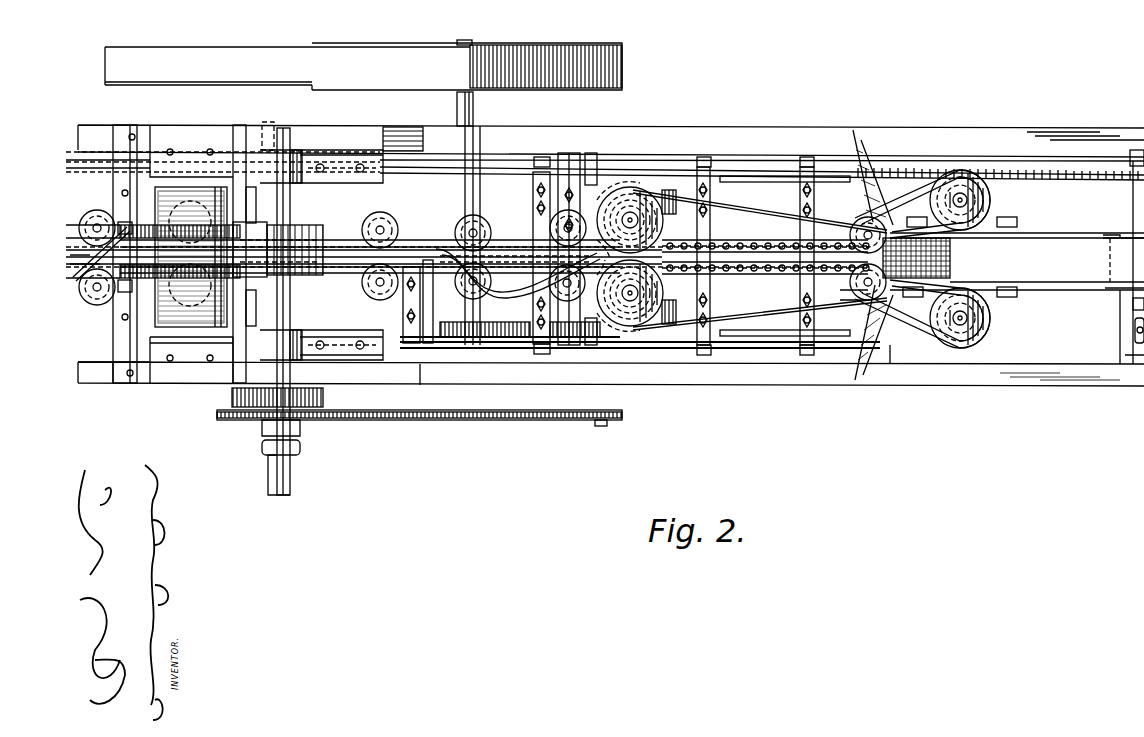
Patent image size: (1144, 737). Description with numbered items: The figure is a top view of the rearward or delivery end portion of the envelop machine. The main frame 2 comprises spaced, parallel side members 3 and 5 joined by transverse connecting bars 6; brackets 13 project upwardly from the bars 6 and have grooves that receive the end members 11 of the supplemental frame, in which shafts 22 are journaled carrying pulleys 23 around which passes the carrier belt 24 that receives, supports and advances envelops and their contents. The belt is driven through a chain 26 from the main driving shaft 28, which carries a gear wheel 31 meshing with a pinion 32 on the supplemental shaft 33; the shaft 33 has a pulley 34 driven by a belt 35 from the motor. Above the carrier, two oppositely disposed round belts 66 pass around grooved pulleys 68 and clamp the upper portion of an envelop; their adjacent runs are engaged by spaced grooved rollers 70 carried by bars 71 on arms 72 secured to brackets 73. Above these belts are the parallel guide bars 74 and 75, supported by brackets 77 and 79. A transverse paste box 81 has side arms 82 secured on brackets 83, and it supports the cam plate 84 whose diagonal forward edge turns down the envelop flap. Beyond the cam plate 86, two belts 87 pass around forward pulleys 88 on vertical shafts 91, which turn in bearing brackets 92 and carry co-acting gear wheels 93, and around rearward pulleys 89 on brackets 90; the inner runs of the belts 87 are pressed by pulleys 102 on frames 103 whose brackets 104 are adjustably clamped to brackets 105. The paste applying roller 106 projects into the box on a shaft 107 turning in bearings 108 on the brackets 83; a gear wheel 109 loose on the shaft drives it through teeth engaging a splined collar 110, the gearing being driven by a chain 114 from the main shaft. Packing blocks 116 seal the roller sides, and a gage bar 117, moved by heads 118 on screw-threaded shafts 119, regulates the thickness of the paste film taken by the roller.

The main frame 2 is at (129, 383).
The side member 3 is at (1064, 131).
The side member 5 is at (1023, 385).
The transverse connecting bar 6 is at (1125, 355).
The end member 11 is at (1133, 304).
The bracket 13 is at (1134, 331).
The shaft 22 is at (1140, 140).
The pulley 23 is at (1113, 236).
The belt 24 is at (1017, 260).
The chain 26 is at (1028, 175).
The main driving shaft 28 is at (594, 153).
The gear wheel 31 is at (512, 340).
The pinion 32 is at (444, 340).
The supplemental shaft 33 is at (474, 107).
The pulley 34 is at (384, 44).
The belt 35 is at (224, 55).
The belt 66 is at (926, 170).
The grooved pulley 68 is at (992, 200).
The grooved roller 70 is at (88, 214).
The bar 71 is at (420, 240).
The arm 72 is at (541, 156).
The bracket 73 is at (535, 194).
The bar 74 is at (420, 262).
The bar 75 is at (428, 288).
The bracket 77 is at (126, 160).
The bracket 79 is at (110, 380).
The paste box 81 is at (196, 187).
The side arm 82 is at (186, 130).
The bracket 83 is at (296, 136).
The cam plate 84 is at (90, 290).
The cam plate 86 is at (504, 248).
The belt 87 is at (776, 207).
The forward pulley 88 is at (648, 186).
The rearward pulley 89 is at (878, 230).
The bracket 90 is at (866, 255).
The vertical shaft 91 is at (633, 218).
The bearing bracket 92 is at (667, 188).
The gear wheel 93 is at (617, 190).
The pulley 102 is at (723, 238).
The frame 103 is at (770, 238).
The bracket 104 is at (722, 177).
The bracket 105 is at (705, 158).
The paste applying roller 106 is at (300, 230).
The shaft 107 is at (291, 322).
The bearing 108 is at (304, 158).
The gear wheel 109 is at (326, 398).
The collar 110 is at (298, 446).
The chain 114 is at (500, 422).
The packing block 116 is at (248, 186).
The gage bar 117 is at (216, 304).
The head 118 is at (180, 257).
The screw-threaded shaft 119 is at (140, 222).